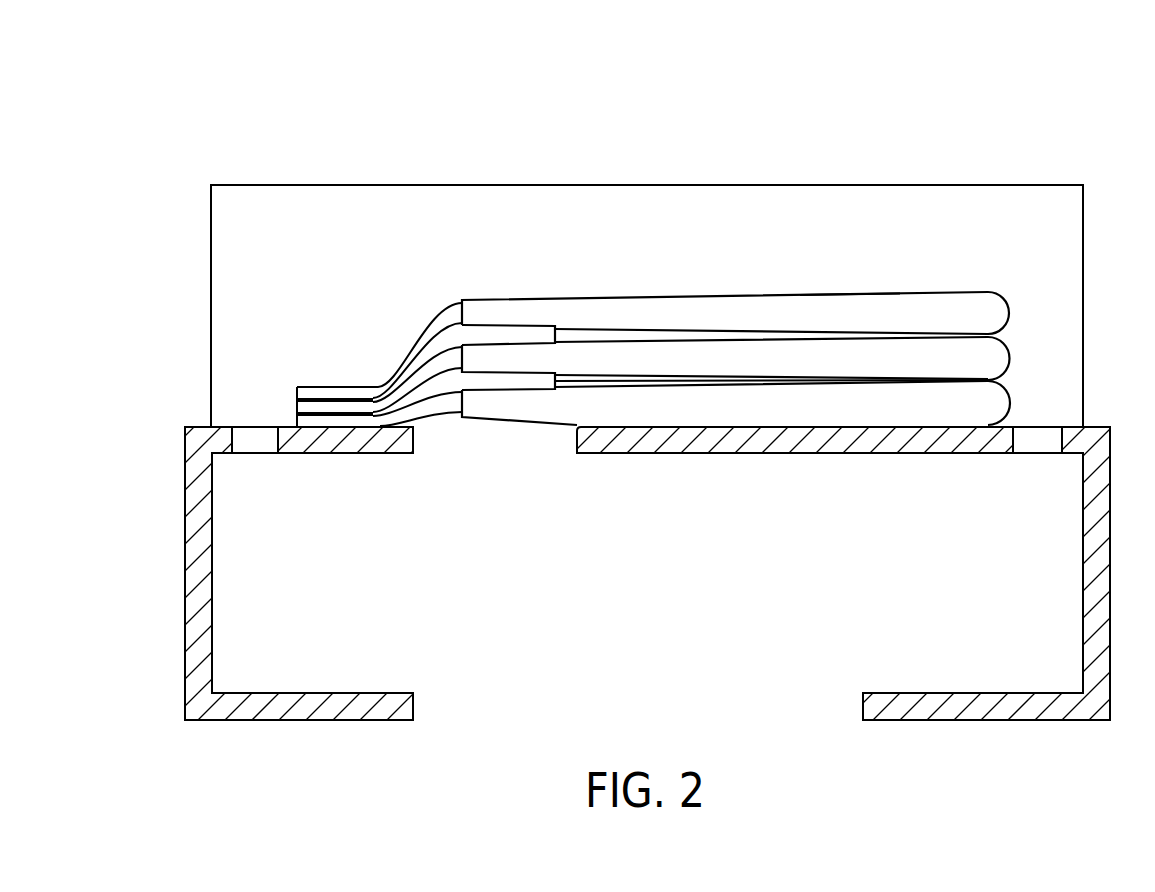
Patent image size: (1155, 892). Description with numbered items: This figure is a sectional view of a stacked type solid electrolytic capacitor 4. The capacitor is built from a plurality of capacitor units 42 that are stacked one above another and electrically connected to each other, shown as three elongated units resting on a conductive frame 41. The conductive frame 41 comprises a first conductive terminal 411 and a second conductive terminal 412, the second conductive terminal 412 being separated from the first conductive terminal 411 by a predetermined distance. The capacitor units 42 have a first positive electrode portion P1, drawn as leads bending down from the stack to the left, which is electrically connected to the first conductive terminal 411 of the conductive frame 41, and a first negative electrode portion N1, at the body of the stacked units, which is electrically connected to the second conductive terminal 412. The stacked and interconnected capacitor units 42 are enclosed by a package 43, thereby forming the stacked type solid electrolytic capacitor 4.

The stacked type solid electrolytic capacitor 4 is at (113, 90).
The conductive frame 41 is at (759, 573).
The first conductive terminal 411 is at (195, 623).
The second conductive terminal 412 is at (1098, 624).
The capacitor unit 42 is at (988, 308).
The package 43 is at (237, 305).
The first positive electrode portion P1 is at (410, 330).
The first negative electrode portion N1 is at (846, 283).